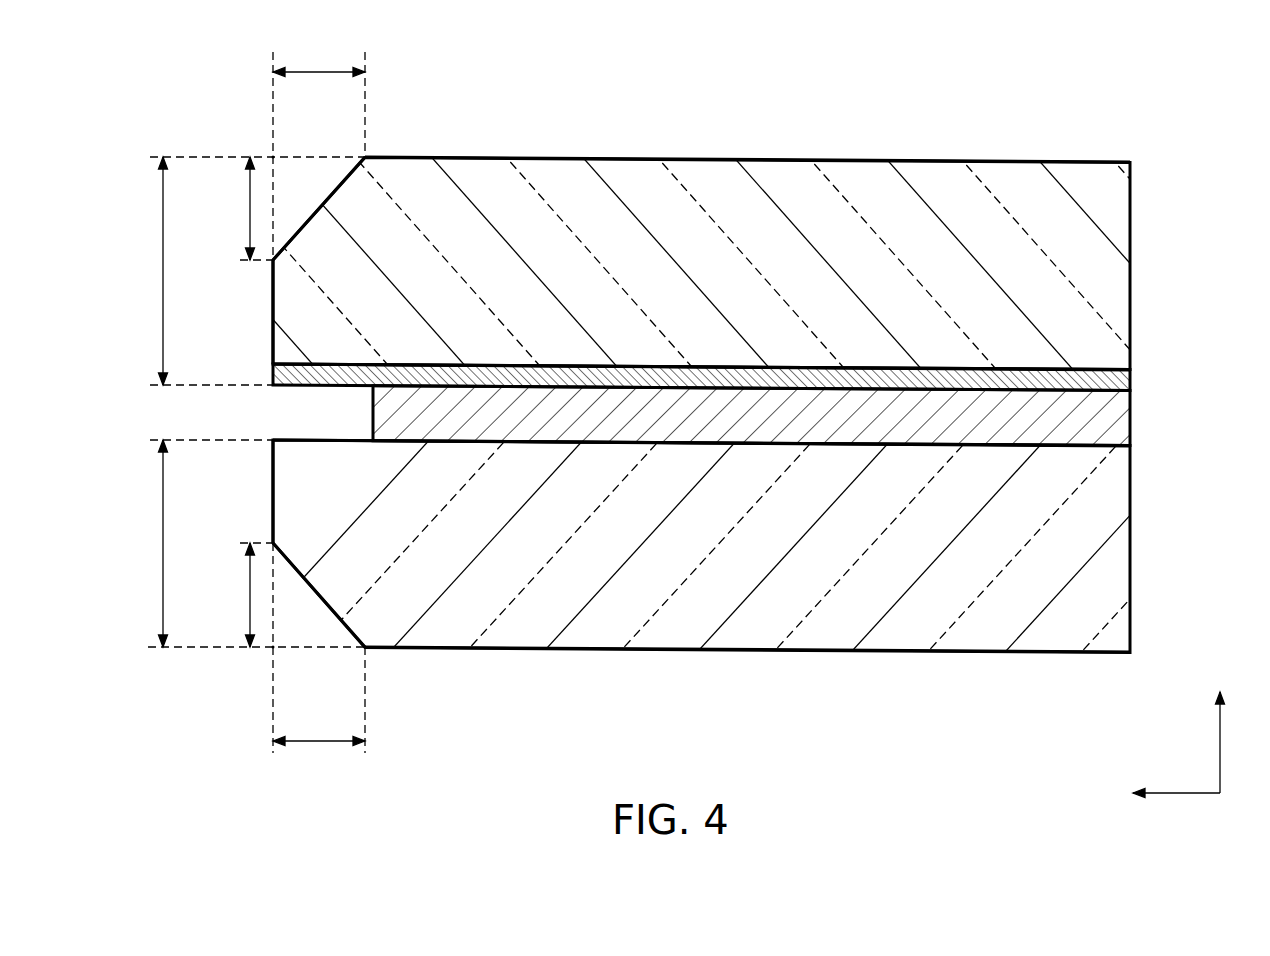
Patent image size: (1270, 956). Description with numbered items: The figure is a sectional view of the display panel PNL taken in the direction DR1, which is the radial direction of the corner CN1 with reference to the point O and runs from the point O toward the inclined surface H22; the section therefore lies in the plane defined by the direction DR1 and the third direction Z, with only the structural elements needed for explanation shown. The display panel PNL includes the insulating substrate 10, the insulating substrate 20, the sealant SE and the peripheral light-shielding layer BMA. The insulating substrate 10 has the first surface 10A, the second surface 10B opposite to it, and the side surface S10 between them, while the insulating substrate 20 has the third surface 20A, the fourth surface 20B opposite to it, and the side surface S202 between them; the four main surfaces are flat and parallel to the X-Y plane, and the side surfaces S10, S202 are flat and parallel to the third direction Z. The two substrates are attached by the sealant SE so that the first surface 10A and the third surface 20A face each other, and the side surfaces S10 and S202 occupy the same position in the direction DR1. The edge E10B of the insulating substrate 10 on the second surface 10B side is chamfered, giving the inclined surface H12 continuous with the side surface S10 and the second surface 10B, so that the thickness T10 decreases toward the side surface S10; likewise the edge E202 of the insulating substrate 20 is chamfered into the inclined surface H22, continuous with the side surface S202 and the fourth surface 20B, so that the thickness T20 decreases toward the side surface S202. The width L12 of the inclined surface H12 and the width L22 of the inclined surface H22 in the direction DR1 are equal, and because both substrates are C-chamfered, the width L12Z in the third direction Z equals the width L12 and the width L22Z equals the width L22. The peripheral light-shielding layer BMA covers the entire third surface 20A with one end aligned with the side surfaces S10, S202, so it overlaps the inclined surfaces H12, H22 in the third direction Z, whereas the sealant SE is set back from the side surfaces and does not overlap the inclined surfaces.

The insulating substrate 20 is at (1122, 235).
The insulating substrate 10 is at (1122, 561).
The peripheral light-shielding layer BMA is at (1133, 379).
The sealant SE is at (1122, 433).
The fourth surface 20B is at (612, 158).
The second surface 10B is at (508, 652).
The third surface 20A is at (520, 373).
The first surface 10A is at (554, 430).
The side surface S202 is at (260, 325).
The side surface S10 is at (260, 488).
The inclined surface H22 is at (313, 207).
The inclined surface H12 is at (313, 601).
The edge E202 is at (271, 153).
The edge E10B is at (269, 650).
The width L22 is at (319, 61).
The width L12 is at (319, 731).
The width L22Z is at (224, 208).
The width L12Z is at (224, 595).
The thickness T20 is at (146, 271).
The thickness T10 is at (146, 543).
The corner CN1 is at (180, 728).
The display panel PNL is at (1210, 178).
The point O is at (1130, 144).
The third direction Z is at (1219, 729).
The direction DR1 is at (1154, 794).